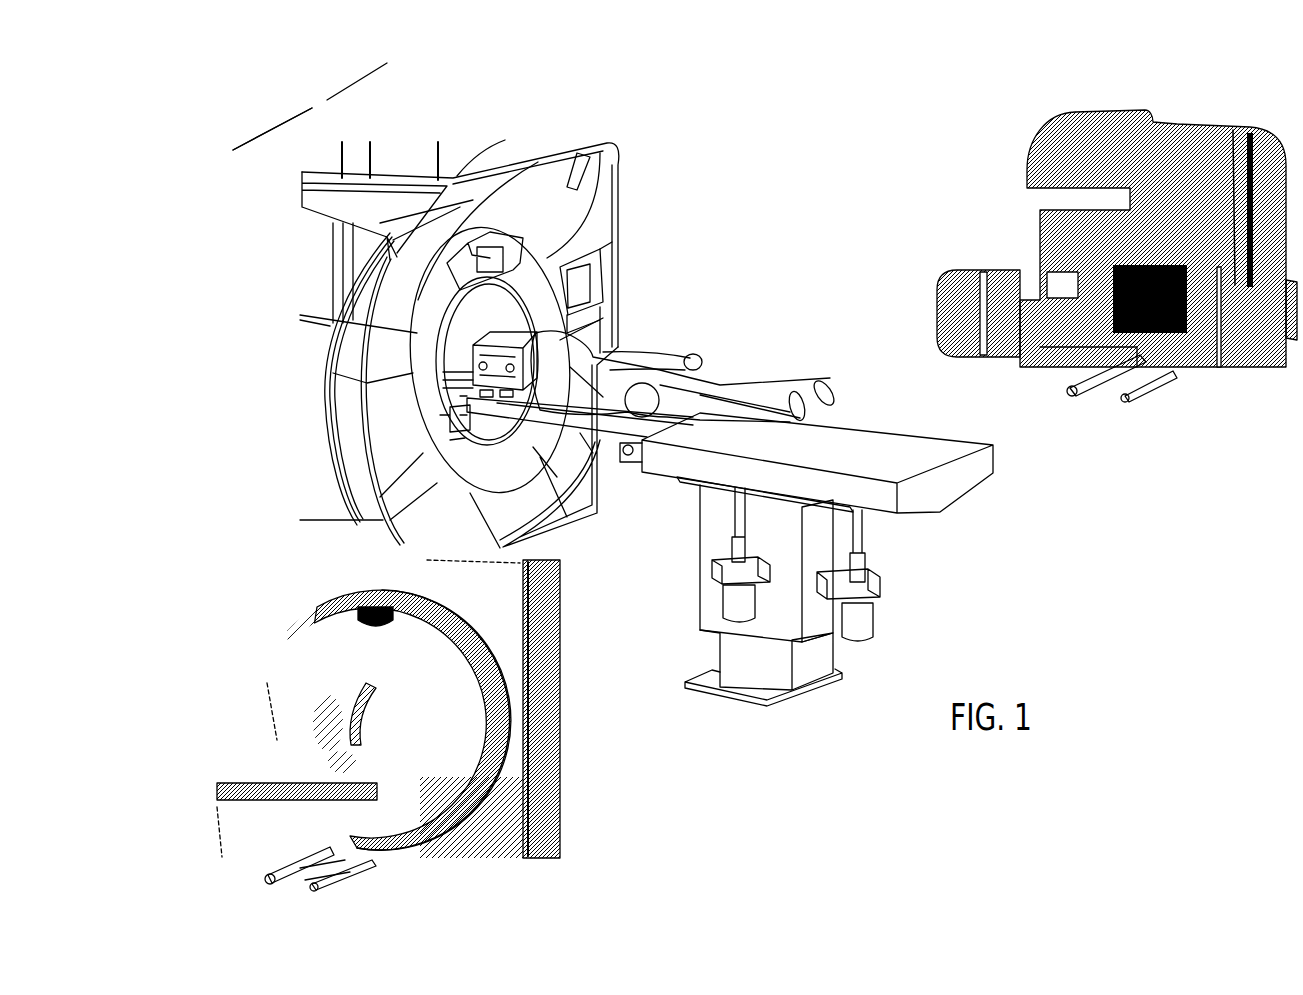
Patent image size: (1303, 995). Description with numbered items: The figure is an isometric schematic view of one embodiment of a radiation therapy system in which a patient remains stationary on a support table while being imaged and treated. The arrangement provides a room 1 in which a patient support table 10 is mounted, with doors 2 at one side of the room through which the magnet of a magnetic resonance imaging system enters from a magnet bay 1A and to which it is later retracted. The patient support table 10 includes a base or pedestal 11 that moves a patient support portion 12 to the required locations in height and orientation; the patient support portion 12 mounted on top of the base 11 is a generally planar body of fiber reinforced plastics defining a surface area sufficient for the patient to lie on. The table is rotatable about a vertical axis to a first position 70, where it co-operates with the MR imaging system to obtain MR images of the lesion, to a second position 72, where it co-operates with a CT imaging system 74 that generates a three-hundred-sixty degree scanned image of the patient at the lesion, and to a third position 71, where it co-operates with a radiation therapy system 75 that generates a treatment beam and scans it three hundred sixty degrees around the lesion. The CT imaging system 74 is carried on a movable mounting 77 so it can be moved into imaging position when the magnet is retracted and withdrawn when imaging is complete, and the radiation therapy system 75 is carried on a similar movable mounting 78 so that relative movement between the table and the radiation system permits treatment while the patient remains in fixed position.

The room 1 is at (815, 316).
The magnet bay 1A is at (279, 97).
The doors 2 is at (321, 78).
The patient support table 10 is at (754, 543).
The base 11 is at (815, 714).
The patient support portion 12 is at (990, 448).
The first position 70 is at (642, 331).
The third position 71 is at (1103, 294).
The second position 72 is at (442, 728).
The CT imaging system 74 is at (519, 768).
The radiation therapy system 75 is at (1152, 410).
The movable mounting 77 is at (352, 870).
The movable mounting 78 is at (1148, 385).